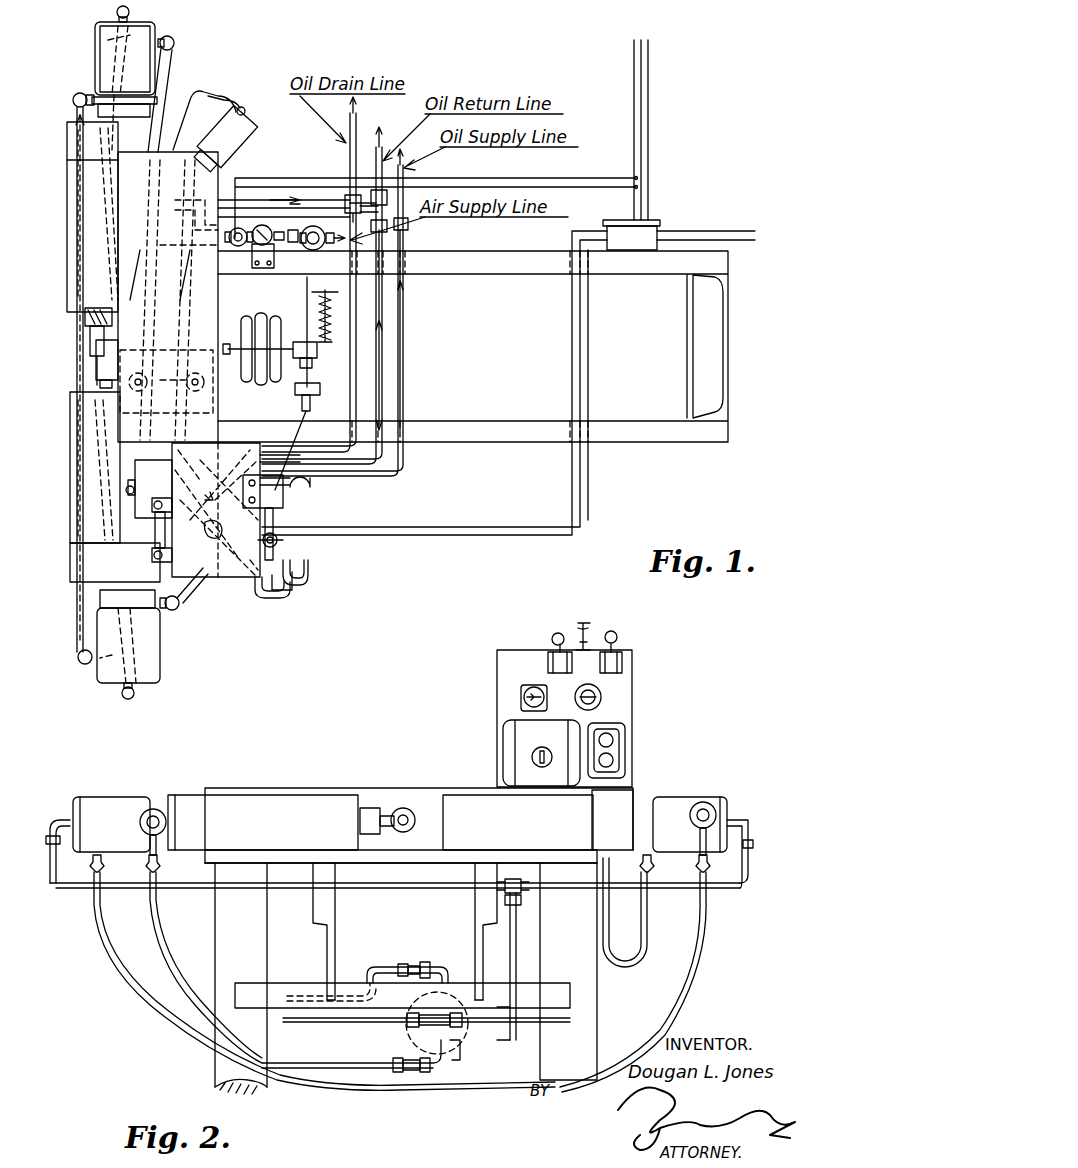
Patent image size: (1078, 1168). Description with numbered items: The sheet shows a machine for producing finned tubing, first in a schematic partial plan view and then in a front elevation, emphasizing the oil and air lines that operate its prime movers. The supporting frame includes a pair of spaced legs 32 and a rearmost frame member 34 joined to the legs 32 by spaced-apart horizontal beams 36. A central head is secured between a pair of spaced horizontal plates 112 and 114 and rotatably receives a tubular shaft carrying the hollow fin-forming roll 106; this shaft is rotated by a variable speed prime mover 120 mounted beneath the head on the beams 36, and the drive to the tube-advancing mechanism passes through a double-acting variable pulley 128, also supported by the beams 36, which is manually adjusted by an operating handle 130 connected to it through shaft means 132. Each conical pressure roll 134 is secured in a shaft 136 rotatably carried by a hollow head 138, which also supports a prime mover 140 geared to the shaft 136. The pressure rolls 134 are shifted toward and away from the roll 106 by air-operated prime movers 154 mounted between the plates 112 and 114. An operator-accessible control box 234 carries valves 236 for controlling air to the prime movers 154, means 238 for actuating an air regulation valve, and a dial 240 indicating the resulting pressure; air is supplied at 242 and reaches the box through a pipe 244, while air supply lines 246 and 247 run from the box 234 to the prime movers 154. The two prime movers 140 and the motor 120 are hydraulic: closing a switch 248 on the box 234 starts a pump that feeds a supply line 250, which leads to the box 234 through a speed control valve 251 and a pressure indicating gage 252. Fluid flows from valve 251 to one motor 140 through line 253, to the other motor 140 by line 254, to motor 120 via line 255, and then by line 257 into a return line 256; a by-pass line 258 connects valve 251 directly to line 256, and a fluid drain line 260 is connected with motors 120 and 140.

In FIG. 2, the legs 32 is at (268, 1083).
In FIG. 1, the rearmost frame member 34 is at (700, 358).
In FIG. 1, the horizontal beams 36 is at (530, 268).
In FIG. 2, the horizontal beams 36 is at (345, 950).
In FIG. 1, the roll 106 is at (100, 348).
In FIG. 2, the roll 106 is at (410, 808).
In FIG. 1, the horizontal plate 112 is at (208, 293).
In FIG. 2, the horizontal plate 112 is at (335, 787).
In FIG. 2, the horizontal plate 114 is at (262, 854).
In FIG. 1, the variable speed prime mover 120 is at (150, 395).
In FIG. 2, the variable speed prime mover 120 is at (408, 1040).
In FIG. 1, the variable pulley 128 is at (256, 315).
In FIG. 1, the operating handle 130 is at (283, 505).
In FIG. 1, the shaft means 132 is at (300, 416).
In FIG. 1, the pressure roll 134 is at (92, 332).
In FIG. 2, the pressure roll 134 is at (388, 815).
In FIG. 1, the shaft 136 is at (90, 308).
In FIG. 2, the shaft 136 is at (360, 826).
In FIG. 1, the hollow head 138 is at (72, 205).
In FIG. 2, the hollow head 138 is at (283, 795).
In FIG. 1, the prime mover 140 is at (94, 55).
In FIG. 2, the prime mover 140 is at (117, 795).
In FIG. 1, the prime mover 154 is at (238, 165).
In FIG. 1, the control box 234 is at (248, 452).
In FIG. 2, the control box 234 is at (497, 697).
In FIG. 1, the valves 236 is at (157, 512).
In FIG. 2, the valves 236 is at (556, 645).
In FIG. 1, the actuating means 238 is at (208, 524).
In FIG. 2, the actuating means 238 is at (584, 622).
In FIG. 1, the dial 240 is at (170, 550).
In FIG. 2, the dial 240 is at (601, 697).
In FIG. 1, the air supply 242 is at (322, 250).
In FIG. 1, the pipe 244 is at (238, 248).
In FIG. 1, the air supply line 246 is at (275, 596).
In FIG. 1, the air supply line 247 is at (210, 92).
In FIG. 2, the switch 248 is at (626, 750).
In FIG. 1, the supply line 250 is at (405, 365).
In FIG. 1, the speed control valve 251 is at (126, 493).
In FIG. 2, the speed control valve 251 is at (538, 748).
In FIG. 1, the pressure indicating gage 252 is at (160, 460).
In FIG. 2, the pressure indicating gage 252 is at (521, 690).
In FIG. 1, the line 253 is at (190, 580).
In FIG. 2, the line 253 is at (648, 935).
In FIG. 1, the line 254 is at (72, 110).
In FIG. 2, the line 254 is at (696, 960).
In FIG. 1, the line 255 is at (176, 53).
In FIG. 2, the line 255 is at (175, 1040).
In FIG. 1, the return line 256 is at (356, 198).
In FIG. 1, the line 257 is at (262, 200).
In FIG. 2, the line 257 is at (390, 965).
In FIG. 1, the by-pass line 258 is at (385, 338).
In FIG. 1, the fluid drain line 260 is at (357, 135).
In FIG. 2, the fluid drain line 260 is at (413, 888).